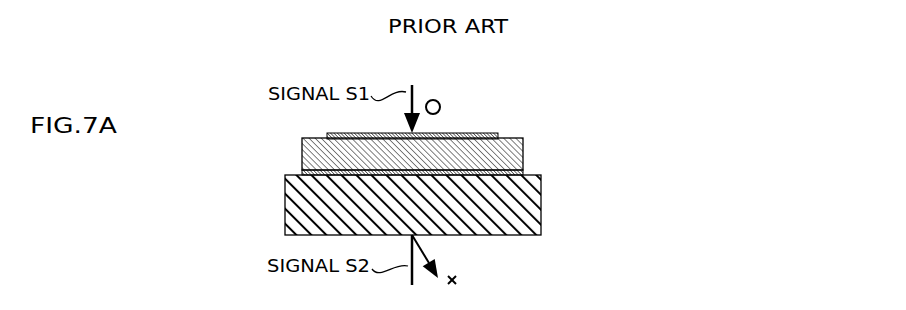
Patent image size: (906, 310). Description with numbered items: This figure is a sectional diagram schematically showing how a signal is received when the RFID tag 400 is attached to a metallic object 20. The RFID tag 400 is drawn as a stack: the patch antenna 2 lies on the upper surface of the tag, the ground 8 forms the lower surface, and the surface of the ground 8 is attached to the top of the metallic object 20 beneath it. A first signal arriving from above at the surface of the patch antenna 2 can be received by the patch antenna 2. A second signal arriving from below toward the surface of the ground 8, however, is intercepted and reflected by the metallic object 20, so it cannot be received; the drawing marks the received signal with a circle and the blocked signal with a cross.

The RFID tag 400 is at (302, 152).
The patch antenna 2 is at (498, 135).
The ground 8 is at (523, 171).
The metallic object 20 is at (541, 213).